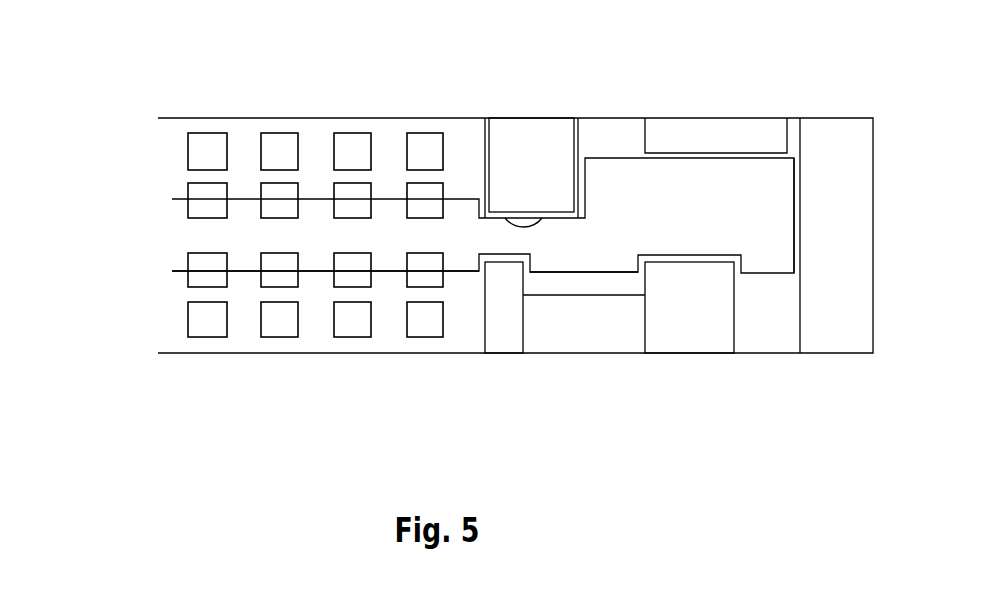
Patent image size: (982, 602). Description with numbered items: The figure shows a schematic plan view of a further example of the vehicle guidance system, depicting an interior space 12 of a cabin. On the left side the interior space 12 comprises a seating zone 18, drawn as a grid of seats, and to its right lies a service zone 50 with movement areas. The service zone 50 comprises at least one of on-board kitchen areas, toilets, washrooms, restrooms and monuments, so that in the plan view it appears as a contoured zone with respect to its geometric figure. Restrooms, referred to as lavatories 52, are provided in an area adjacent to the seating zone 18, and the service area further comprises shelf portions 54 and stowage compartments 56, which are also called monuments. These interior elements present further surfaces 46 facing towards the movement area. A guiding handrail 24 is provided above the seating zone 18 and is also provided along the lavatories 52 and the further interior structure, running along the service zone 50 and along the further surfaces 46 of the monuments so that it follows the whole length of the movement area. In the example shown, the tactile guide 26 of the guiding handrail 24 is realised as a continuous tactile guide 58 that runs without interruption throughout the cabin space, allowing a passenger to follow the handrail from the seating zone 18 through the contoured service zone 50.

The interior space 12 is at (160, 228).
The seating zone 18 is at (392, 147).
The guiding handrail 24 is at (393, 262).
The tactile guide 26 is at (585, 262).
The further surfaces 46 is at (503, 212).
The service zone 50 is at (716, 196).
The lavatories 52 is at (565, 118).
The shelf portions 54 is at (573, 333).
The stowage compartments 56 is at (687, 338).
The continuous tactile guide 58 is at (786, 216).